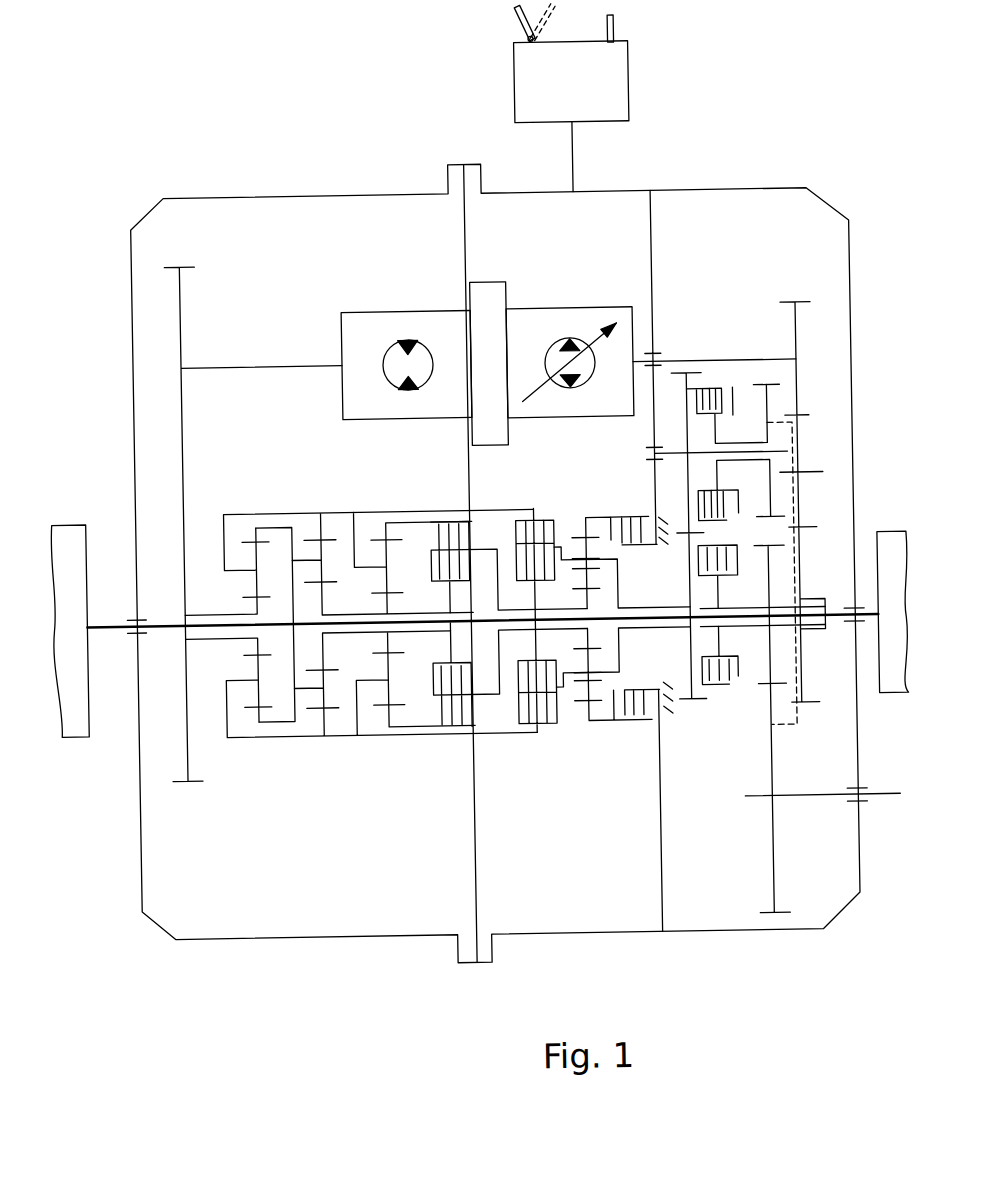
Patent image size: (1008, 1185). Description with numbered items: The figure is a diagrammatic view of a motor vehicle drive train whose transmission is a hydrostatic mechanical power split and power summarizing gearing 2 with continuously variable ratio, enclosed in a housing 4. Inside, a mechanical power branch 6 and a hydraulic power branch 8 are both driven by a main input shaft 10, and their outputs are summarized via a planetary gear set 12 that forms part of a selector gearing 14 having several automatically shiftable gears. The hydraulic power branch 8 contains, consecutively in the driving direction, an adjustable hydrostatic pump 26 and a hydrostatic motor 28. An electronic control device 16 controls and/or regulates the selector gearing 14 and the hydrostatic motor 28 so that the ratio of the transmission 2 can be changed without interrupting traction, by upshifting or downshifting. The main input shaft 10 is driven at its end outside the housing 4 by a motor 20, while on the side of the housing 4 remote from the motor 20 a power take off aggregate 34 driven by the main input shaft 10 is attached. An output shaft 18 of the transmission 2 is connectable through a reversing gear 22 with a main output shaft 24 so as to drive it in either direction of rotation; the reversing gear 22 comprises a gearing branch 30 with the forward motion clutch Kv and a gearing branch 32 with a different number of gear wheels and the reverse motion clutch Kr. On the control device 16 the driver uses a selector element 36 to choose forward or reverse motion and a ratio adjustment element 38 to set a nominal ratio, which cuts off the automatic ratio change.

The power split and power summarizing gearing 2 is at (333, 829).
The housing 4 is at (222, 937).
The mechanical power branch 6 is at (326, 735).
The hydraulic power branch 8 is at (296, 362).
The main input shaft 10 is at (106, 615).
The planetary gear set 12 is at (256, 554).
The selector gearing 14 is at (425, 742).
The electronic control device 16 is at (637, 97).
The output shaft 18 is at (633, 610).
The motor 20 is at (67, 516).
The reversing gear 22 is at (716, 719).
The main output shaft 24 is at (879, 800).
The adjustable hydrostatic pump 26 is at (568, 310).
The hydrostatic motor 28 is at (391, 310).
The gearing branch with forward motion clutch 30 is at (770, 672).
The gearing branch with reverse motion clutch 32 is at (773, 401).
The aggregate (power take off) 34 is at (888, 537).
The selector element 36 is at (523, 24).
The ratio adjustment element 38 is at (625, 25).